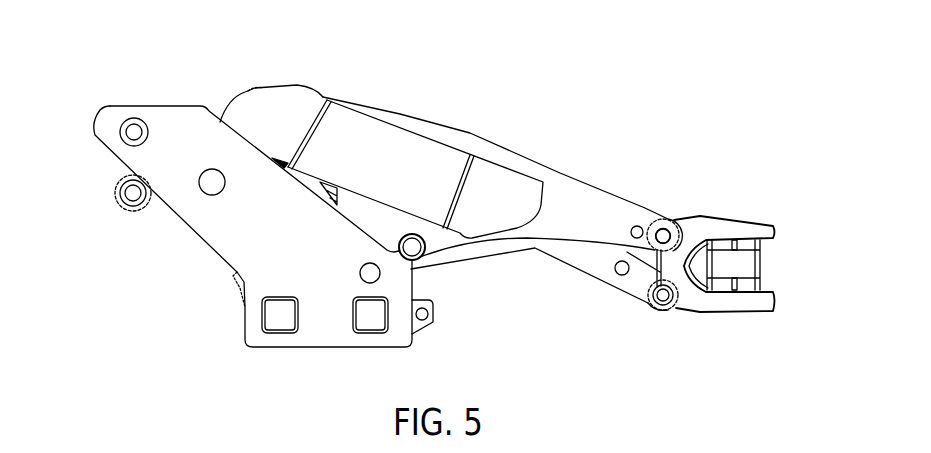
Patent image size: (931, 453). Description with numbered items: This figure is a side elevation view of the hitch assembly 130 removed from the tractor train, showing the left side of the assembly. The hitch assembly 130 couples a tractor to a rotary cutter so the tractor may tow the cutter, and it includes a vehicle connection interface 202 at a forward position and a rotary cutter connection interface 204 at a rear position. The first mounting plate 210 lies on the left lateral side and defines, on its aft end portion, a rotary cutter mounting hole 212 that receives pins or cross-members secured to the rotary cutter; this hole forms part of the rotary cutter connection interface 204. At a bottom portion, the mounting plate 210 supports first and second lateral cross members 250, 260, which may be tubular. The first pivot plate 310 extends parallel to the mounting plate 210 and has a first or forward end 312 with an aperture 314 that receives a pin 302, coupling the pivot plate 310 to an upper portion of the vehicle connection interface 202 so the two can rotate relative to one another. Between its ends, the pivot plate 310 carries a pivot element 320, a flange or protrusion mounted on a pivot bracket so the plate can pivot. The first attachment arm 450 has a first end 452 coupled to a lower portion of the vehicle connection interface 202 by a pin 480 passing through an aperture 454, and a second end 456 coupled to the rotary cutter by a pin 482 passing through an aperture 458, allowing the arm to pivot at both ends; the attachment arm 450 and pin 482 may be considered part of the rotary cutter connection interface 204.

The hitch assembly 130 is at (466, 170).
The vehicle connection interface 202 is at (737, 207).
The rotary cutter connection interface 204 is at (155, 101).
The first mounting plate 210 is at (274, 218).
The rotary cutter mounting hole 212 is at (121, 130).
The first lateral cross member 250 is at (280, 330).
The second lateral cross member 260 is at (370, 330).
The pin 302 is at (669, 235).
The first pivot plate 310 is at (560, 189).
The first end of first pivot plate 312 is at (603, 208).
The aperture 314 is at (662, 229).
The pivot element 320 is at (432, 262).
The first attachment arm 450 is at (567, 304).
The first end of first attachment arm 452 is at (634, 285).
The aperture 454 is at (655, 303).
The second end of first attachment arm 456 is at (147, 207).
The aperture 458 is at (120, 198).
The pin 480 is at (664, 298).
The pin 482 is at (118, 212).